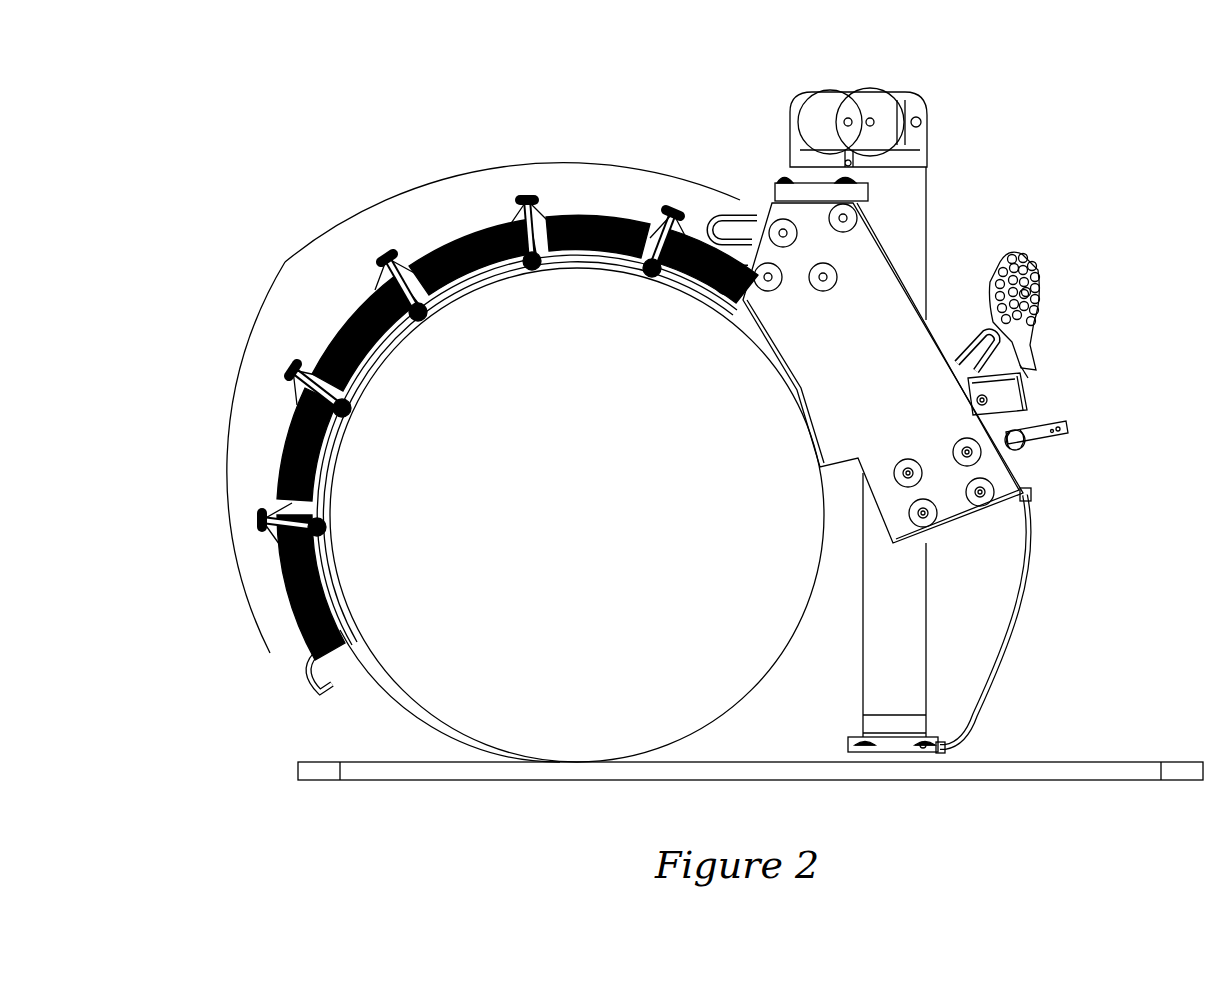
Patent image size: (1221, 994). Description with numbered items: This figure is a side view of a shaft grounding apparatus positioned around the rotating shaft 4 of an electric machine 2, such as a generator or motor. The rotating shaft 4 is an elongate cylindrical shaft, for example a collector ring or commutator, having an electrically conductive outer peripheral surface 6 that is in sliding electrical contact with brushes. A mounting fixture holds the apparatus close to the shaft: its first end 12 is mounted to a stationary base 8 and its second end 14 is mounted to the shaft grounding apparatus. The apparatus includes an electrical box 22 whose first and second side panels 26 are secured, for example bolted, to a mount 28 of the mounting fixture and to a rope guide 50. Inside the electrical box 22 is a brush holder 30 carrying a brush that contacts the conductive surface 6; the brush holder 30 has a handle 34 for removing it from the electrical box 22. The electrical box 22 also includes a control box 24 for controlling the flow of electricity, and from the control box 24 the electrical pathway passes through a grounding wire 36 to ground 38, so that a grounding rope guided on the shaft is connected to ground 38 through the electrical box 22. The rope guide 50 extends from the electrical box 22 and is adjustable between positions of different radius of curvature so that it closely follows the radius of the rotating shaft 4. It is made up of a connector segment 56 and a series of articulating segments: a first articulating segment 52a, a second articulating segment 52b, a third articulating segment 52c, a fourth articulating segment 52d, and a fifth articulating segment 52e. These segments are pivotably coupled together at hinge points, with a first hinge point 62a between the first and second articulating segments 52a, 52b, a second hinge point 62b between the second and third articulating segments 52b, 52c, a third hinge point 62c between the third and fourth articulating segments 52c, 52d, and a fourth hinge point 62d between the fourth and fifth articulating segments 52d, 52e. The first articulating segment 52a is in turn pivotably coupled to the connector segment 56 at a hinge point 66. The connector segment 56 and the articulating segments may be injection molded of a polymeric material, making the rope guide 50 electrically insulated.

The electric machine 2 is at (966, 97).
The rotating shaft 4 is at (690, 685).
The electrically conductive outer peripheral surface 6 is at (430, 690).
The base 8 is at (1148, 767).
The first end 12 is at (992, 733).
The second end 14 is at (897, 185).
The electrical box 22 is at (977, 266).
The control box 24 is at (1042, 472).
The first and second side panels 26 is at (870, 295).
The mount 28 is at (784, 180).
The brush holder 30 is at (1062, 382).
The handle 34 is at (1028, 292).
The grounding wire 36 is at (1010, 632).
The ground 38 is at (923, 748).
The rope guide 50 is at (286, 262).
The first articulating segment 52a is at (575, 257).
The second articulating segment 52b is at (477, 270).
The third articulating segment 52c is at (390, 353).
The fourth articulating segment 52d is at (318, 462).
The fifth articulating segment 52e is at (323, 590).
The connector segment 56 is at (697, 283).
The first hinge point 62a is at (526, 193).
The second hinge point 62b is at (386, 250).
The third hinge point 62c is at (290, 366).
The fourth hinge point 62d is at (256, 517).
The hinge point 66 is at (687, 198).